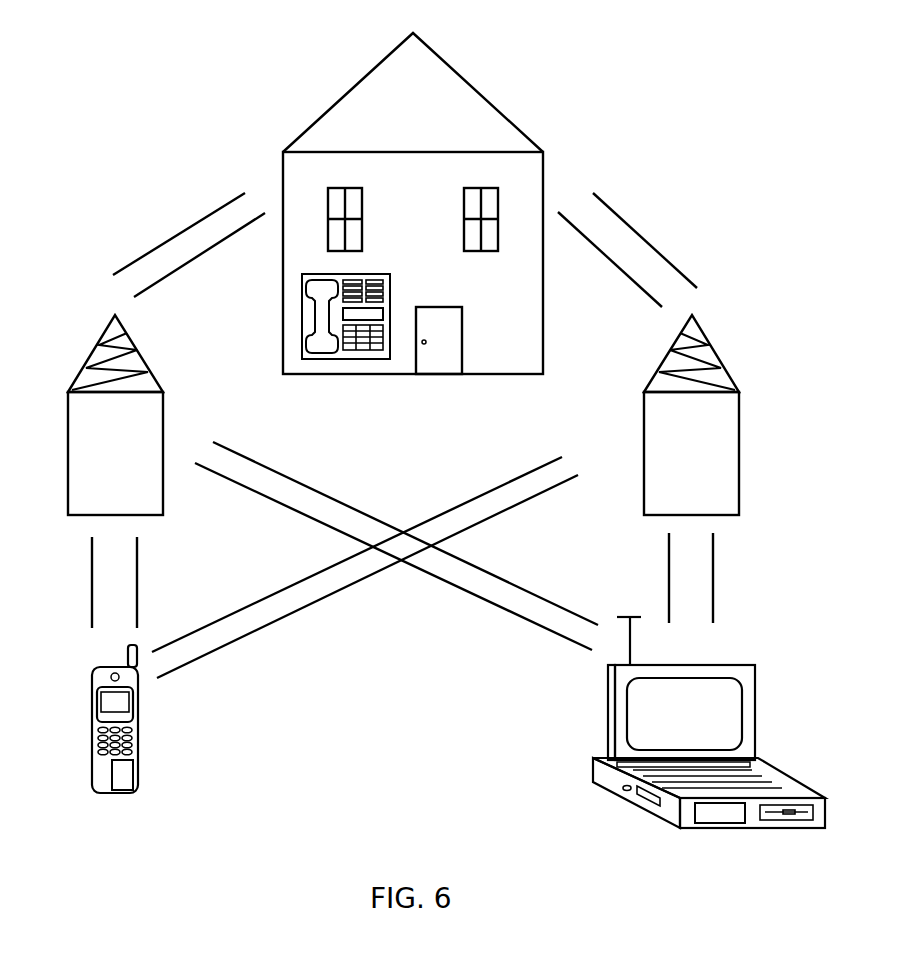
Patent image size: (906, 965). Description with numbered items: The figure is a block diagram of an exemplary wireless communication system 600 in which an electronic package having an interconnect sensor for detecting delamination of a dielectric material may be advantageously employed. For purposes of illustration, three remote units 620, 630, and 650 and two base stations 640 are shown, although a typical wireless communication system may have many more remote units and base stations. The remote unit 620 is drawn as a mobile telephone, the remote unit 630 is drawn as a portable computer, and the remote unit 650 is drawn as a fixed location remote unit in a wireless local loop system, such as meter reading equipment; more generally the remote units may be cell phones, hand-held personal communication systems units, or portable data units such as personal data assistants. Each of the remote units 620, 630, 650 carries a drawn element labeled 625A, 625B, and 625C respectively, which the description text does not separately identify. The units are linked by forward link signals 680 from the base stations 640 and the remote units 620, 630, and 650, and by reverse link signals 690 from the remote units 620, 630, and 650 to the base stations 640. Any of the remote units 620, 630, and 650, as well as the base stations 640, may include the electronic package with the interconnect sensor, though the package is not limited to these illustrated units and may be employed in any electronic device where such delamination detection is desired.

The wireless communication system 600 is at (126, 71).
The remote unit 620 is at (97, 677).
The display of mobile phone 625A is at (105, 800).
The display of telephone 625B is at (372, 362).
The display of laptop computer 625C is at (727, 813).
The remote unit 630 is at (737, 665).
The base station 640 is at (92, 353).
The remote unit 650 is at (302, 327).
The forward link signals 680 is at (183, 230).
The reverse link signals 690 is at (187, 263).